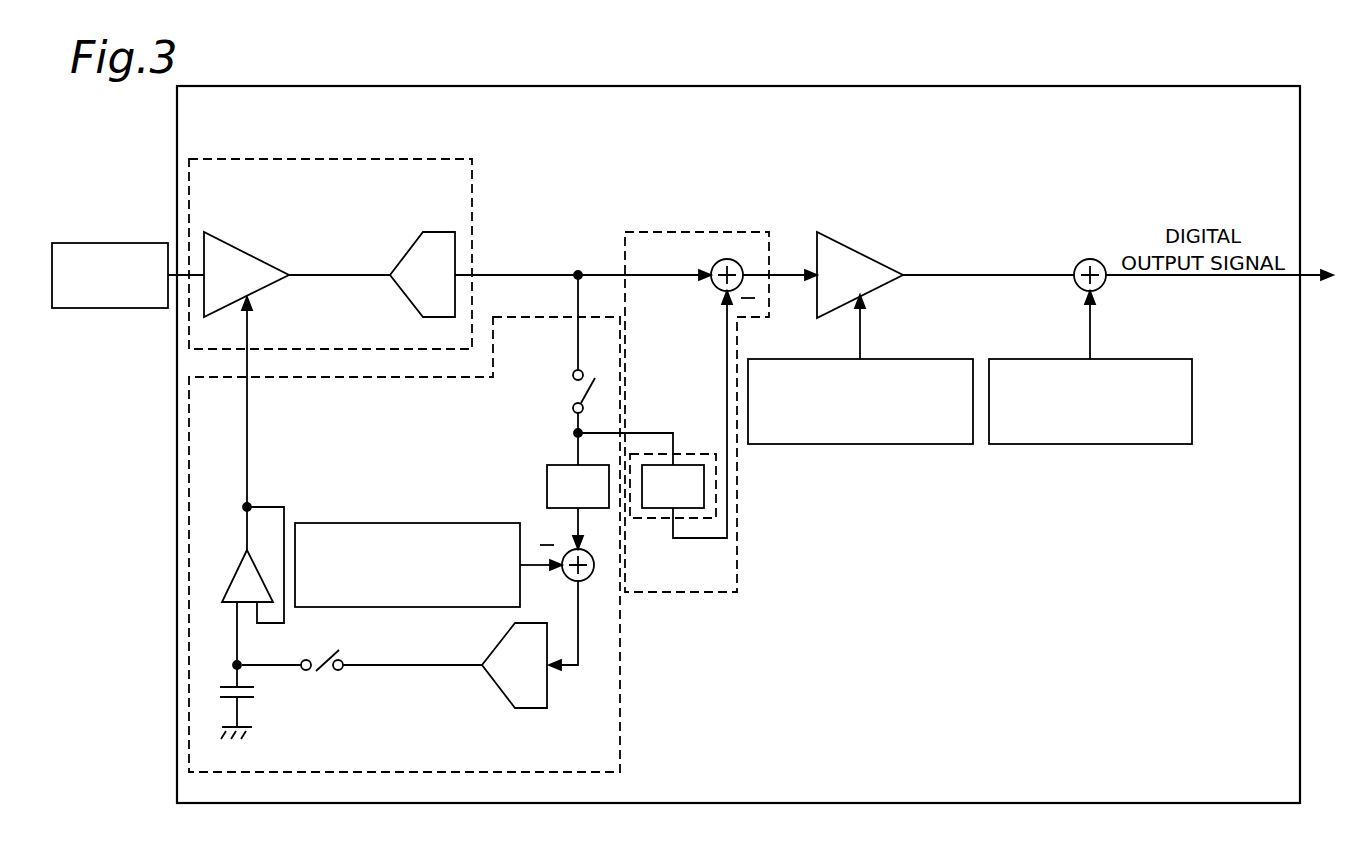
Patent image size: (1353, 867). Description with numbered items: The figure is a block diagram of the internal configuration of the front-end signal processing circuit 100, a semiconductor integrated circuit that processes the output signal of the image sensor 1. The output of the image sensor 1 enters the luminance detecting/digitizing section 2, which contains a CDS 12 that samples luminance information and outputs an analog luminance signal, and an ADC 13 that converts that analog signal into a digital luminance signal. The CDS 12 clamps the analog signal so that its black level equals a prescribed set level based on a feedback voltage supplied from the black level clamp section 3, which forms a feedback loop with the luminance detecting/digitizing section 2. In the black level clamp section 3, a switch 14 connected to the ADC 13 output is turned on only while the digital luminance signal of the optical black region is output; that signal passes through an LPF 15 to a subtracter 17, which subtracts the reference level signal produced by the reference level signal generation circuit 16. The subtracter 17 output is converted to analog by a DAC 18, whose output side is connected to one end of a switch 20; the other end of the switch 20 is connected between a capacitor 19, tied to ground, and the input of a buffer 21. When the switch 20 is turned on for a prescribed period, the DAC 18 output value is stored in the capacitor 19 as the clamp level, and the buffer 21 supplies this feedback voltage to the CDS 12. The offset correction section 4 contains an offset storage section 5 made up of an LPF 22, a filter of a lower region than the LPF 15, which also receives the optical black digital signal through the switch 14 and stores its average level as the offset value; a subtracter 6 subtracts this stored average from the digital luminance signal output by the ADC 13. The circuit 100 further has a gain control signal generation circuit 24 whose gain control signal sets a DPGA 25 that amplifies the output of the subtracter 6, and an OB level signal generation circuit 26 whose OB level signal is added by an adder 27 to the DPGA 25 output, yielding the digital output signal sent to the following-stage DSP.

The front-end signal processing circuit 100 is at (604, 86).
The image sensor 1 is at (113, 243).
The luminance detecting/digitizing section 2 is at (334, 159).
The black level clamp section 3 is at (622, 729).
The offset correction section 4 is at (692, 594).
The offset storage section 5 is at (650, 520).
The subtracter 6 is at (727, 258).
The CDS 12 is at (240, 246).
The ADC 13 is at (441, 232).
The switch 14 is at (572, 385).
The LPF 15 is at (552, 465).
The reference level signal generation circuit 16 is at (410, 523).
The subtracter 17 is at (590, 583).
The DAC 18 is at (528, 708).
The capacitor 19 is at (255, 690).
The switch 20 is at (326, 683).
The buffer 21 is at (236, 567).
The LPF 22 is at (697, 463).
The gain control signal generation circuit 24 is at (858, 444).
The DPGA 25 is at (866, 250).
The OB level signal generation circuit 26 is at (1088, 444).
The adder 27 is at (1090, 258).